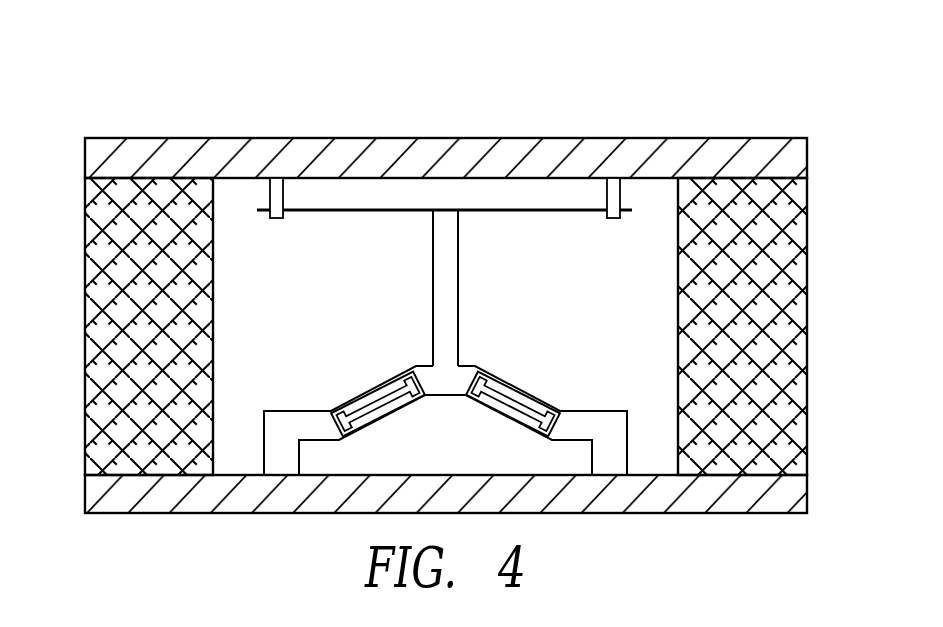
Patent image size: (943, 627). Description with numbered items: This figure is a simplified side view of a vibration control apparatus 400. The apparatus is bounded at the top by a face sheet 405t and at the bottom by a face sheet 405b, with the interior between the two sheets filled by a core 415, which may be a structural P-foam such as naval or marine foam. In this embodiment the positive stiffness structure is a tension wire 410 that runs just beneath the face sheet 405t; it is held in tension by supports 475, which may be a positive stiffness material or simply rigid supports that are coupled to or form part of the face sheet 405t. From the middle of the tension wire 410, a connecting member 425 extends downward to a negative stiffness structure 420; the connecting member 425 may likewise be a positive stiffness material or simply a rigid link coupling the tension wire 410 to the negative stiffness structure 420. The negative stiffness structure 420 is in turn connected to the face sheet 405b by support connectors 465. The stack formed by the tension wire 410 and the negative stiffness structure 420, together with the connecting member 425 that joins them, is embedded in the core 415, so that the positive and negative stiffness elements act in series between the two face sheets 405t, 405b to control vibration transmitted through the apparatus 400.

The vibration control apparatus 400 is at (248, 93).
The face sheet 405t is at (764, 138).
The face sheet 405b is at (765, 513).
The tension wire 410 is at (531, 209).
The core 415 is at (213, 283).
The negative stiffness structure 420 is at (369, 395).
The connecting member 425 is at (456, 270).
The support connectors 465 is at (626, 437).
The supports 475 is at (619, 193).